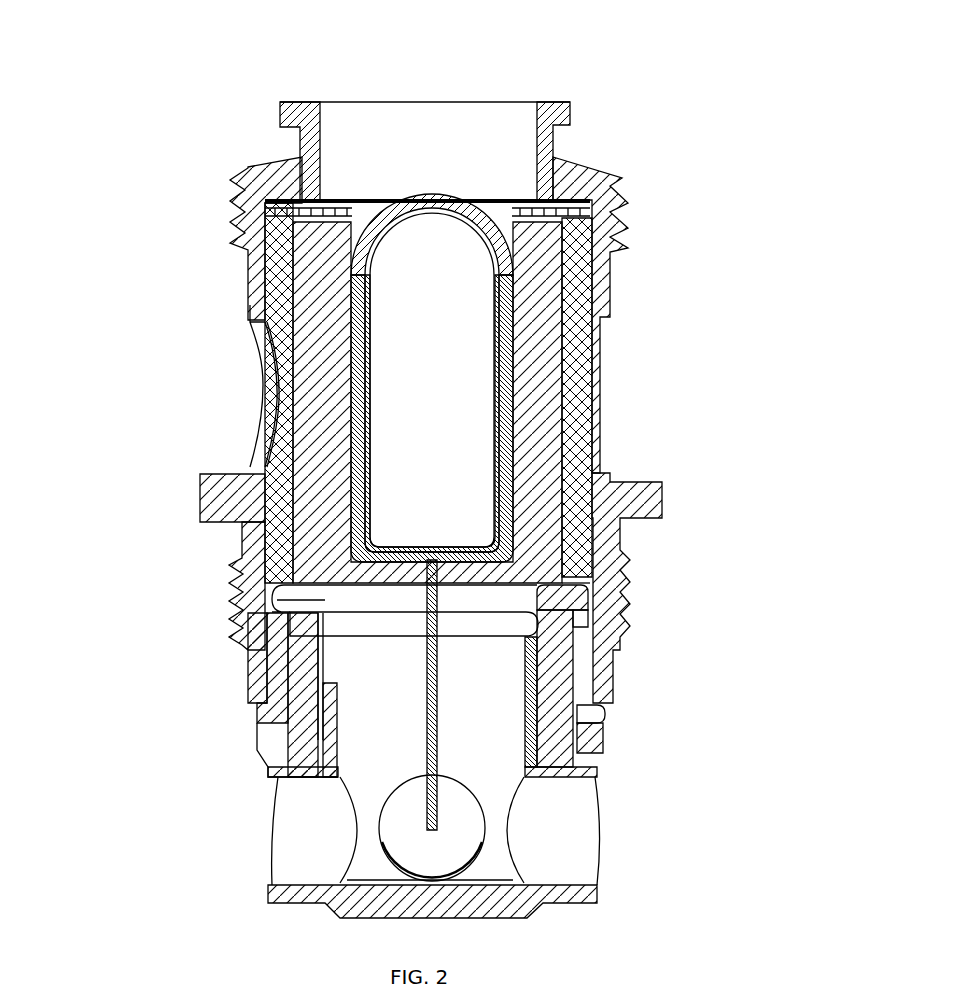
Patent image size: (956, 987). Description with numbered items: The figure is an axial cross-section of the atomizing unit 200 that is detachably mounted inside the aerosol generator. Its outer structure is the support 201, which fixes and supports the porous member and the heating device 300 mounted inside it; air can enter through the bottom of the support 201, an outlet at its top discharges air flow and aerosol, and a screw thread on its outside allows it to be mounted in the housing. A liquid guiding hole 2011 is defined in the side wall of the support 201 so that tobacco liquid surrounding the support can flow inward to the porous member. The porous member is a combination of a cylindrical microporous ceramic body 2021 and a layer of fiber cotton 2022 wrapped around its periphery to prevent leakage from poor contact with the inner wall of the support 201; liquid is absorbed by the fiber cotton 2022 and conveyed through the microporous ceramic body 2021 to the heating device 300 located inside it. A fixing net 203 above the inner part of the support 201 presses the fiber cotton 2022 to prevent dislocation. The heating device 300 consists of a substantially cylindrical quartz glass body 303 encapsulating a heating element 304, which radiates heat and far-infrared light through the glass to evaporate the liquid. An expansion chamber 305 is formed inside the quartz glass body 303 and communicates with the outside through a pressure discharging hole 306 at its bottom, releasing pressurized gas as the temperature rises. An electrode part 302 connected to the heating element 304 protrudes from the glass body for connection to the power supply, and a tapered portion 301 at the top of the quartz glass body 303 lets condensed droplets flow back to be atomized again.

The atomizing unit 200 is at (428, 465).
The support 201 is at (260, 172).
The liquid guiding hole 2011 is at (252, 342).
The microporous ceramic body 2021 is at (318, 522).
The fiber cotton 2022 is at (247, 470).
The fixing net 203 is at (343, 197).
The heating device 300 is at (561, 287).
The tapered portion 301 is at (450, 195).
The electrode part 302 is at (427, 698).
The quartz glass body 303 is at (510, 334).
The heating element 304 is at (510, 387).
The expansion chamber 305 is at (453, 452).
The pressure discharging hole 306 is at (528, 626).